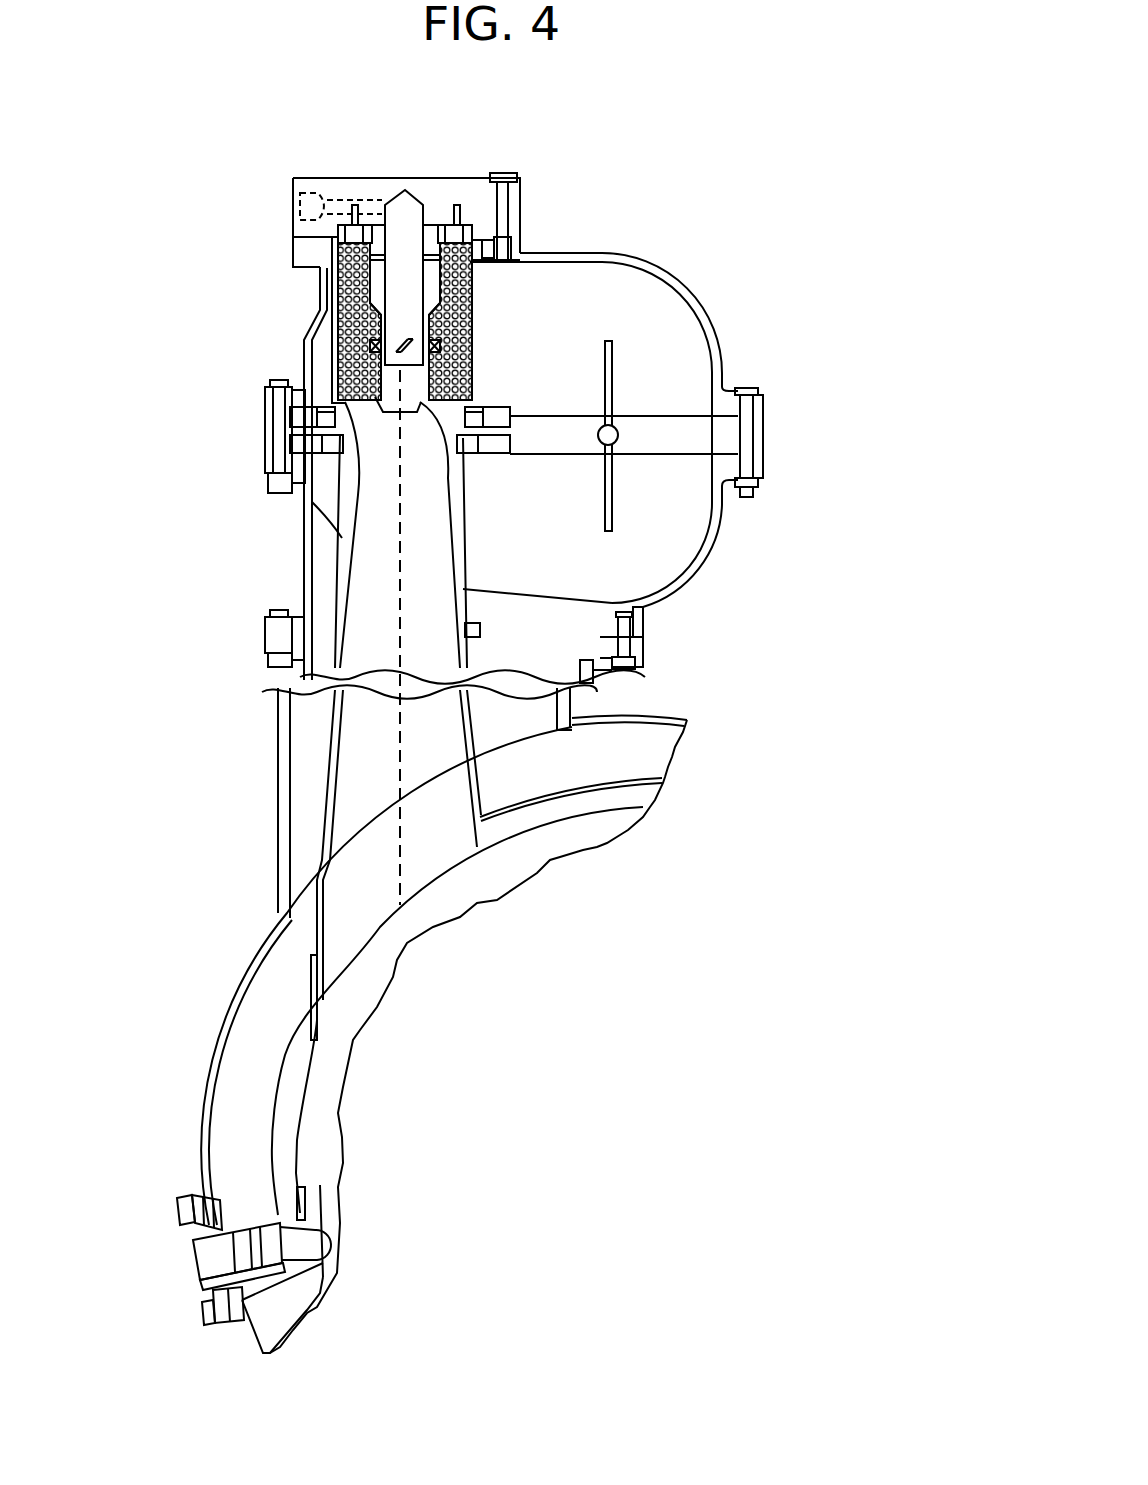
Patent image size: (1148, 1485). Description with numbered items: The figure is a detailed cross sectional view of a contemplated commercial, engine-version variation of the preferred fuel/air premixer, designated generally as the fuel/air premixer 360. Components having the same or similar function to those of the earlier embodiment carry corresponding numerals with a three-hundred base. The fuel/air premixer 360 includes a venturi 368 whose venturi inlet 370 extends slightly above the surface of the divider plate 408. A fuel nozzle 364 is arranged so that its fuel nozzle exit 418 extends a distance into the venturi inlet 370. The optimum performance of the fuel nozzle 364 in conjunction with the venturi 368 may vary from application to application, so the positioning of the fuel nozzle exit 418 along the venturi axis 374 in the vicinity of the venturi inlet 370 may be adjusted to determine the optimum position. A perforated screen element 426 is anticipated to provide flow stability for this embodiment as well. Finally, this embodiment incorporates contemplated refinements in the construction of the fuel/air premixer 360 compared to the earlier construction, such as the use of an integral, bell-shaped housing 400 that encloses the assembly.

The fuel/air premixer 360 is at (701, 238).
The fuel nozzle 364 is at (463, 179).
The venturi 368 is at (347, 557).
The venturi inlet 370 is at (458, 405).
The venturi axis 374 is at (398, 518).
The integral, bell-shaped housing 400 is at (710, 312).
The divider plate 408 is at (758, 410).
The fuel nozzle exit 418 is at (440, 356).
The perforated screen element 426 is at (340, 356).